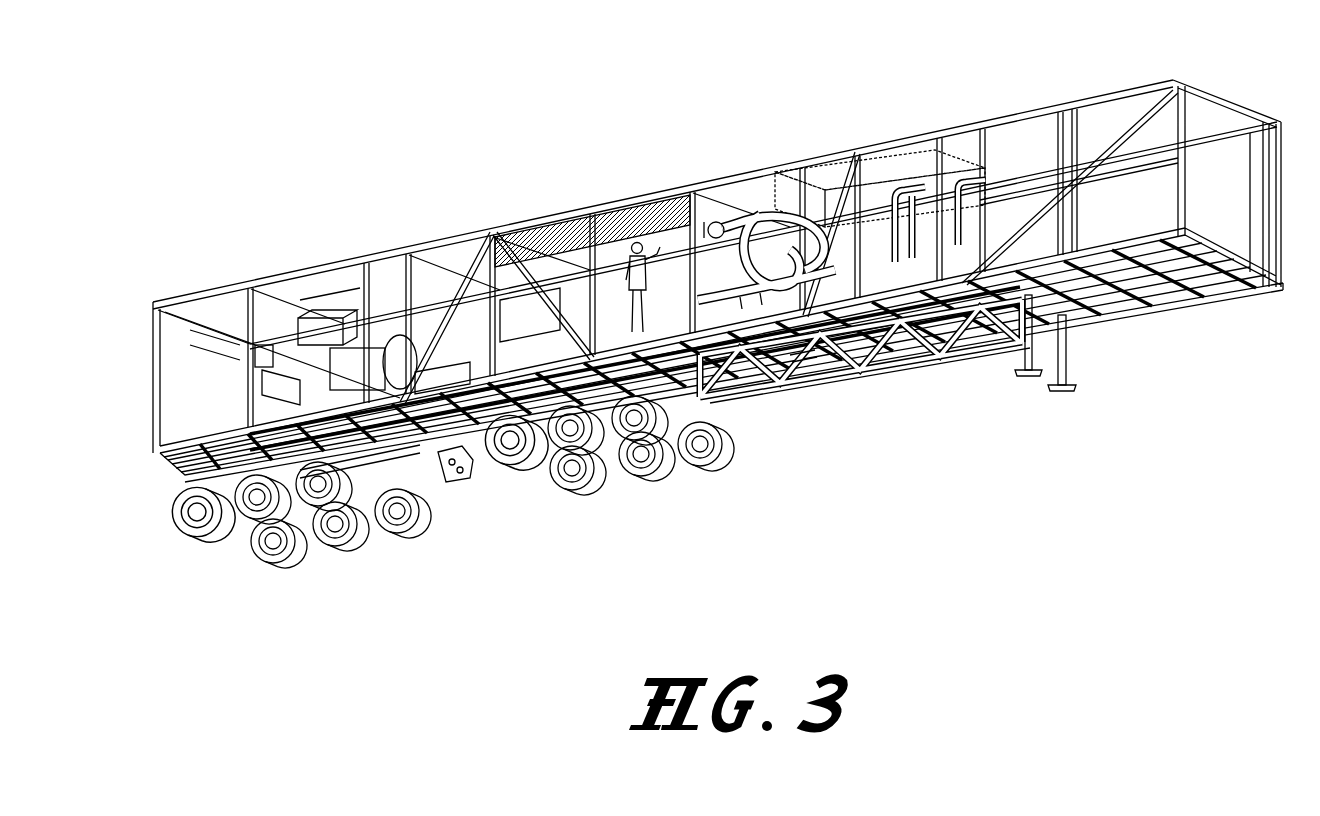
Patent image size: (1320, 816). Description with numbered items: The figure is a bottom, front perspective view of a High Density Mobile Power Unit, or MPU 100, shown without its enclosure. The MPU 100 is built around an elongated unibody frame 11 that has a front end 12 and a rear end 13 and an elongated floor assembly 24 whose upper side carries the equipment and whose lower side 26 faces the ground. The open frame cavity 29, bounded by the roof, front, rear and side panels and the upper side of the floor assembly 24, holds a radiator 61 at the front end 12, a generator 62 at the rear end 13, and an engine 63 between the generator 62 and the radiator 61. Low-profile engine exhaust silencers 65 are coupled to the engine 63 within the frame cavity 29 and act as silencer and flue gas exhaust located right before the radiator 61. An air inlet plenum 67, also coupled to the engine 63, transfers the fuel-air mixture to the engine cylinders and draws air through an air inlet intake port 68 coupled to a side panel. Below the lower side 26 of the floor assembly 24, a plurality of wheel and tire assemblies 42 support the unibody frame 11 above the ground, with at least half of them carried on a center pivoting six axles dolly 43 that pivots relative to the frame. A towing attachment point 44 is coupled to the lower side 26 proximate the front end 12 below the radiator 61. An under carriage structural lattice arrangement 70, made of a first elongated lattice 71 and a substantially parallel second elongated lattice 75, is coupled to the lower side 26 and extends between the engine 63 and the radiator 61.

The MPU 100 is at (768, 112).
The unibody frame 11 is at (153, 300).
The front end 12 is at (1280, 105).
The rear end 13 is at (136, 406).
The floor assembly 24 is at (182, 467).
The lower side 26 is at (797, 353).
The frame cavity 29 is at (724, 212).
The wheel and tire assemblies 42 is at (352, 495).
The center pivoting six axles dolly 43 is at (465, 465).
The towing attachment point 44 is at (1172, 296).
The radiator 61 is at (1030, 165).
The generator 62 is at (347, 338).
The engine 63 is at (522, 262).
The low-profile engine exhaust silencer 65 is at (885, 168).
The air inlet plenum 67 is at (606, 270).
The air inlet intake port 68 is at (660, 212).
The under carriage structural lattice arrangement 70 is at (846, 420).
The first elongated lattice 71 is at (968, 362).
The second elongated lattice 75 is at (880, 377).